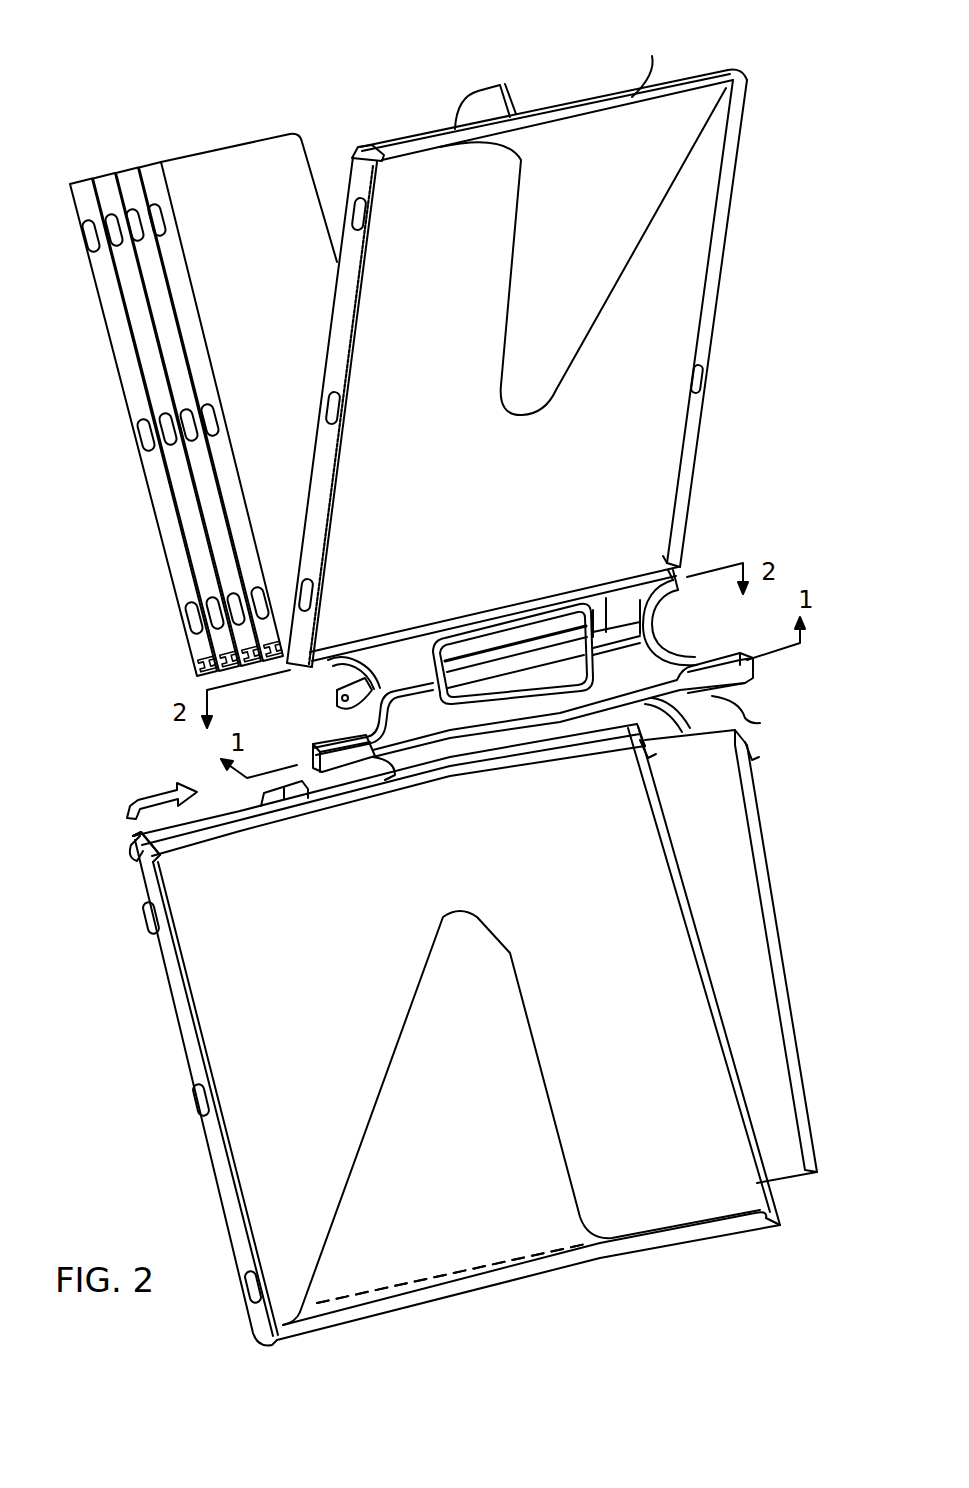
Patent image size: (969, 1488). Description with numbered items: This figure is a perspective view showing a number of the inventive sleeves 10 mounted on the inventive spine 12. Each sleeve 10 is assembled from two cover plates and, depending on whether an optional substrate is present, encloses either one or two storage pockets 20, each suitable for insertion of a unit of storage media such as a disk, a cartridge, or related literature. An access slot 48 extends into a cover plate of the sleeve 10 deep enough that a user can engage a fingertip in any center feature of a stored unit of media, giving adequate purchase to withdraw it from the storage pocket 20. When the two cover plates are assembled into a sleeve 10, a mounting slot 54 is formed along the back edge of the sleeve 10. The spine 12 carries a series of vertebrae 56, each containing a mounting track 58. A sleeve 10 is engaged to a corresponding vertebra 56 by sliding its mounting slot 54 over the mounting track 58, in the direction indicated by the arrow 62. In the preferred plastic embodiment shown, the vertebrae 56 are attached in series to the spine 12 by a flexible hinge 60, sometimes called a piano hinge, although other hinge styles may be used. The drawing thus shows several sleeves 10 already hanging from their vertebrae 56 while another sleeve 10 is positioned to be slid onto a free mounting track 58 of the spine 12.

The sleeve 10 is at (243, 268).
The spine 12 is at (515, 663).
The storage pocket 20 is at (670, 120).
The access slot 48 is at (540, 1212).
The mounting slot 54 is at (131, 853).
The vertebra 56 is at (632, 611).
The mounting track 58 is at (716, 690).
The flexible hinge 60 is at (405, 690).
The arrow 62 is at (127, 802).